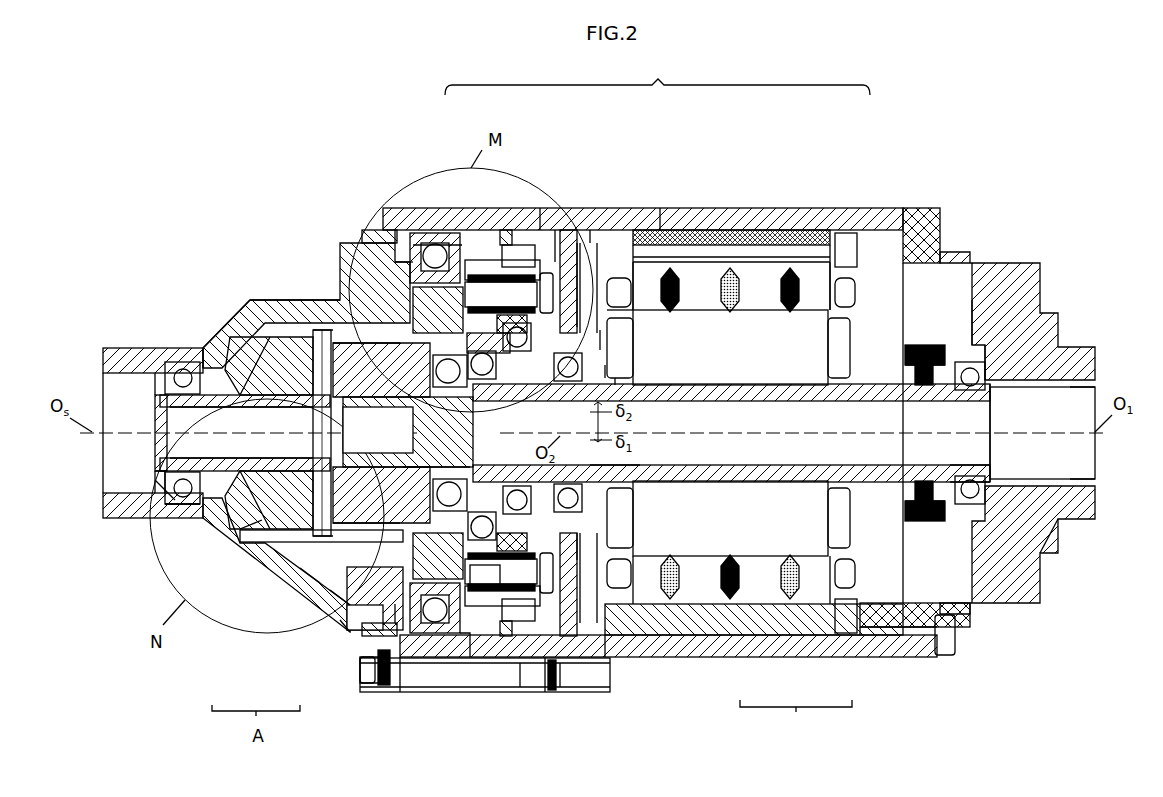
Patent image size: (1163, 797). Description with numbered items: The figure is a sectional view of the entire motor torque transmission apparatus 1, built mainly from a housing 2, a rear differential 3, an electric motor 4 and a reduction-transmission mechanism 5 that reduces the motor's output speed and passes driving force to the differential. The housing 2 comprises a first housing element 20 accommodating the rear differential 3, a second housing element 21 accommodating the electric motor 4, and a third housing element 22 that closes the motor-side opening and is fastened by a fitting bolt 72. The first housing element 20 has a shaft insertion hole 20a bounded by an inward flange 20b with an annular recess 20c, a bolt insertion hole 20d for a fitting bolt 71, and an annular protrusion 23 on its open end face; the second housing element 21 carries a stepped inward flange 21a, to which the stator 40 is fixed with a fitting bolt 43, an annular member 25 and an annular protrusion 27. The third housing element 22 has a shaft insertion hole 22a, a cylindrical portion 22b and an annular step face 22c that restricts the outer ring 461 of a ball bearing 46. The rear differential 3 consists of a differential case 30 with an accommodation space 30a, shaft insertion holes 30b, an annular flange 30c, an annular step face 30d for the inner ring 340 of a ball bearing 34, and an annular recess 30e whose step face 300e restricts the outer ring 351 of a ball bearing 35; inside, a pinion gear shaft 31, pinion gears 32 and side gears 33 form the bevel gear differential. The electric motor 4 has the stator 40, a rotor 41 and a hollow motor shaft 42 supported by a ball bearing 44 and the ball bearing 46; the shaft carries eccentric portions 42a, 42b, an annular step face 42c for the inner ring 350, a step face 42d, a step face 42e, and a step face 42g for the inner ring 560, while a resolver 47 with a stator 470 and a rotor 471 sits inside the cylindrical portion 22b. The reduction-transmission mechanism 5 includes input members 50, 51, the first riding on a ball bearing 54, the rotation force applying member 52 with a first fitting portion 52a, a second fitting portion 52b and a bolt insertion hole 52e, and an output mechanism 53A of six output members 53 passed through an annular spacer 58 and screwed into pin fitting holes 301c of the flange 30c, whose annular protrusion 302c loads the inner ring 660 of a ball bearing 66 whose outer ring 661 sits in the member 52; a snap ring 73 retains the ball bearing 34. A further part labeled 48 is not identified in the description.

The motor torque transmission apparatus 1 is at (920, 163).
The housing 2 is at (657, 77).
The rear differential 3 is at (285, 392).
The electric motor 4 is at (796, 720).
The reduction-transmission mechanism 5 is at (440, 690).
The first housing element 20 is at (398, 212).
The shaft insertion hole 20a is at (220, 355).
The inward flange 20b is at (112, 364).
The annular recess 20c is at (193, 370).
The bolt insertion hole 20d is at (372, 675).
The second housing element 21 is at (685, 201).
The stepped inward flange 21a is at (578, 262).
The third housing element 22 is at (897, 201).
The shaft insertion hole 22a is at (1072, 387).
The cylindrical portion 22b is at (963, 347).
The annular step face 22c is at (980, 362).
The annular protrusion 23 is at (390, 228).
The annular member 25 is at (613, 317).
The annular protrusion 27 is at (562, 212).
The differential case 30 is at (320, 410).
The accommodation space 30a is at (250, 520).
The shaft insertion holes 30b is at (160, 412).
The annular flange 30c is at (350, 600).
The annular step face 30d is at (178, 485).
The annular recess 30e is at (343, 557).
The pinion gear shaft 31 is at (277, 540).
The pinion gears 32 is at (305, 355).
The side gears 33 is at (345, 425).
The ball bearing 34 is at (182, 525).
The ball bearing 35 is at (338, 342).
The stator 40 is at (734, 619).
The rotor 41 is at (771, 567).
The motor shaft 42 is at (874, 497).
The eccentric portion 42a is at (470, 535).
The eccentric portion 42b is at (605, 345).
The annular step face 42c is at (432, 383).
The step face 42d is at (967, 475).
The step face 42e is at (500, 370).
The step face 42g is at (607, 470).
The fitting bolt 43 is at (858, 245).
The ball bearing 44 is at (603, 372).
The ball bearing 46 is at (617, 380).
The resolver 47 is at (913, 368).
The cap body 48 is at (983, 507).
The input member 50 is at (495, 684).
The input member 51 is at (525, 684).
The rotation force applying member 52 is at (518, 200).
The first fitting portion 52a is at (385, 222).
The second fitting portion 52b is at (547, 208).
The bolt insertion hole 52e is at (470, 668).
The output members 53 is at (672, 217).
The output mechanism 53A is at (555, 682).
The ball bearing 54 is at (498, 590).
The annular spacer 58 is at (592, 213).
The ball bearing 66 is at (350, 660).
The fitting bolt 71 is at (385, 650).
The fitting bolt 72 is at (950, 633).
The snap ring 73 is at (182, 513).
The annular step face 300e is at (350, 580).
The pin fitting holes 301c is at (410, 270).
The annular protrusion 302c is at (424, 236).
The inner ring 340 is at (165, 478).
The inner ring 350 is at (415, 362).
The outer ring 351 is at (472, 505).
The outer ring 461 is at (972, 367).
The stator 470 is at (905, 346).
The rotor 471 is at (928, 388).
The inner ring 560 is at (560, 522).
The inner ring 660 is at (507, 221).
The outer ring 661 is at (400, 680).